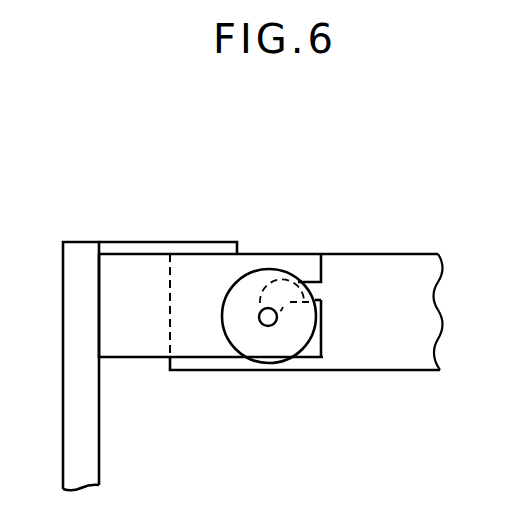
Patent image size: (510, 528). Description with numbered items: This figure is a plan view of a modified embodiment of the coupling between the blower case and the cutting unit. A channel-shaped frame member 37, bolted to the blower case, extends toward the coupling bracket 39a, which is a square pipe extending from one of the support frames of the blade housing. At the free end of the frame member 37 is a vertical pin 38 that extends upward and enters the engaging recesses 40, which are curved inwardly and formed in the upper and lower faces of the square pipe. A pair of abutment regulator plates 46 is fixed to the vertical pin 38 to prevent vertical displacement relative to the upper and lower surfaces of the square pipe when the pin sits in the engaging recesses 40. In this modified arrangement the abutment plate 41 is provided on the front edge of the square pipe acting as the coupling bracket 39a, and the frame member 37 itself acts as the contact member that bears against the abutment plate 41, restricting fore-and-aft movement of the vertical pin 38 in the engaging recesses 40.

The frame member 37 is at (382, 258).
The vertical pin 38 is at (267, 317).
The coupling bracket 39a is at (143, 352).
The engaging recesses 40 is at (306, 283).
The abutment plate 41 is at (141, 242).
The abutment regulator plates 46 is at (287, 356).